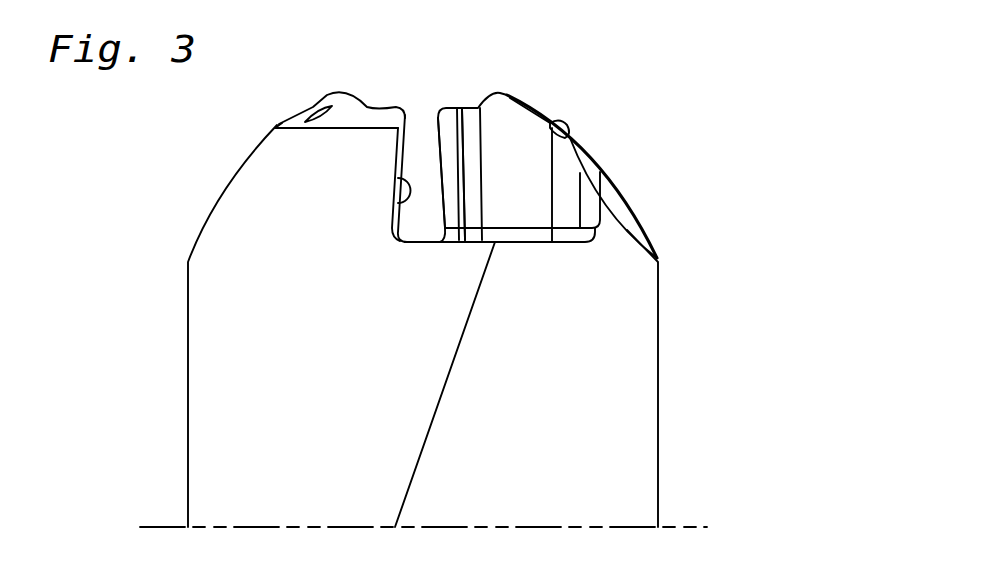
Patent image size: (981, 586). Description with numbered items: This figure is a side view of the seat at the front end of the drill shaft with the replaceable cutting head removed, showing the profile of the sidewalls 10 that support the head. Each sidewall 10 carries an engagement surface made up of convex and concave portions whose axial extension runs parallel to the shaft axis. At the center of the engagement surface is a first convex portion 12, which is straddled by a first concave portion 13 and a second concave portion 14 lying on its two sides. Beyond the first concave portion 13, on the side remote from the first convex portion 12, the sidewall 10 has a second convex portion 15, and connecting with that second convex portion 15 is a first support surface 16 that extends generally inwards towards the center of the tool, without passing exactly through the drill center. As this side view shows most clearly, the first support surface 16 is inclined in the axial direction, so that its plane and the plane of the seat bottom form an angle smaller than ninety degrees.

The sidewall 10 is at (343, 107).
The first convex portion 12 is at (520, 153).
The first concave portion 13 is at (470, 127).
The second concave portion 14 is at (568, 203).
The second convex portion 15 is at (443, 148).
The first support surface 16 is at (387, 208).